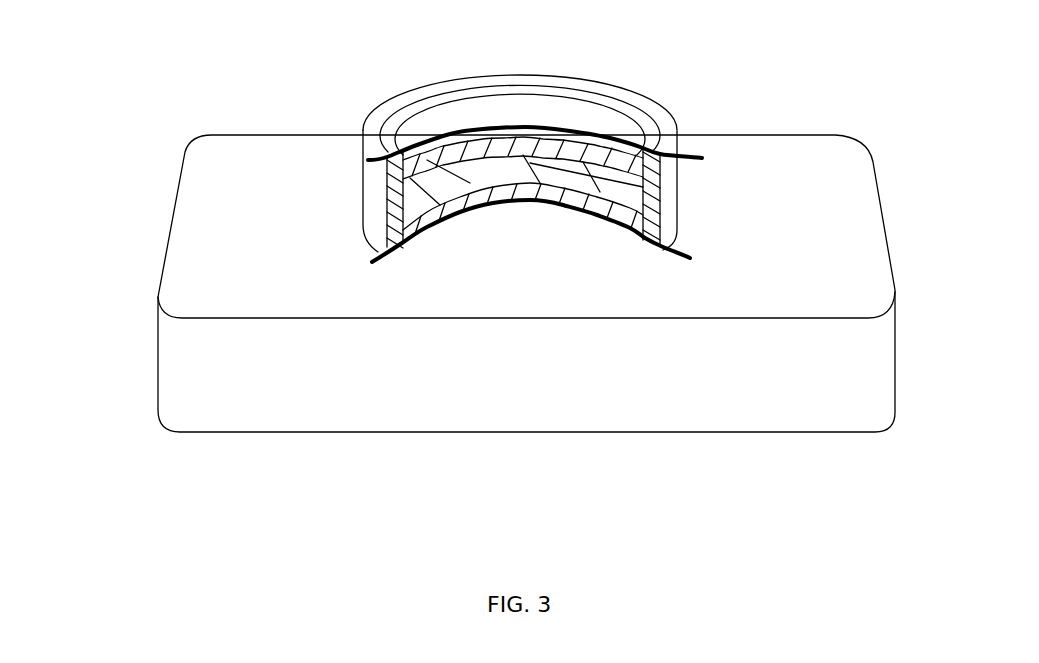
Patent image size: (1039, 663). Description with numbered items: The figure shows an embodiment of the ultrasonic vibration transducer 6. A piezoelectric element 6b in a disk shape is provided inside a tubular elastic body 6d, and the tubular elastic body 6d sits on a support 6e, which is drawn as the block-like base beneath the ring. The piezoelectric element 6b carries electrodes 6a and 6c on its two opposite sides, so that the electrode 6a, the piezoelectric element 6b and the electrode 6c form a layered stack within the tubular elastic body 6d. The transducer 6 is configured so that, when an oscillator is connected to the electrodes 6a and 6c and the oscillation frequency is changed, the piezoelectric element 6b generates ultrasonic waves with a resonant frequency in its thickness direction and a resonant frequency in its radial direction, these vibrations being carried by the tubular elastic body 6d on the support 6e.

The ultrasonic vibration transducer 6 is at (564, 293).
The electrode 6a is at (444, 181).
The piezoelectric element 6b is at (640, 197).
The electrode 6c is at (430, 215).
The tubular elastic body 6d is at (372, 173).
The support 6e is at (867, 258).